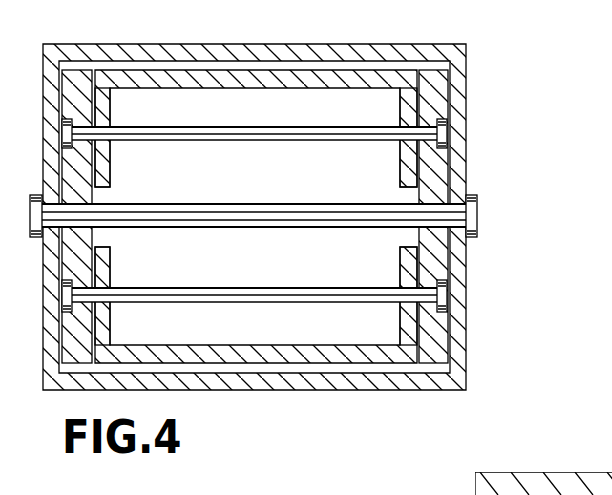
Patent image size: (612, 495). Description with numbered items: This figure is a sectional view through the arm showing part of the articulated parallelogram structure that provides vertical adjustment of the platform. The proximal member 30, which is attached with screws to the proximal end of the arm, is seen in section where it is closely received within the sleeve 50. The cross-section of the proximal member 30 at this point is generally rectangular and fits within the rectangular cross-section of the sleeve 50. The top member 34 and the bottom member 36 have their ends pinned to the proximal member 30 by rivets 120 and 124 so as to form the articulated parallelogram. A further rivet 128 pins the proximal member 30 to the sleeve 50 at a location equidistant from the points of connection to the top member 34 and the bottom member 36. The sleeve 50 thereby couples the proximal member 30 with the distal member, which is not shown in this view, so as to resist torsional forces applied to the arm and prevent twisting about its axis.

The proximal member 30 is at (109, 186).
The top member 34 is at (160, 69).
The bottom member 36 is at (392, 363).
The sleeve 50 is at (463, 82).
The rivet 120 is at (444, 131).
The rivet 124 is at (449, 297).
The rivet 128 is at (477, 213).